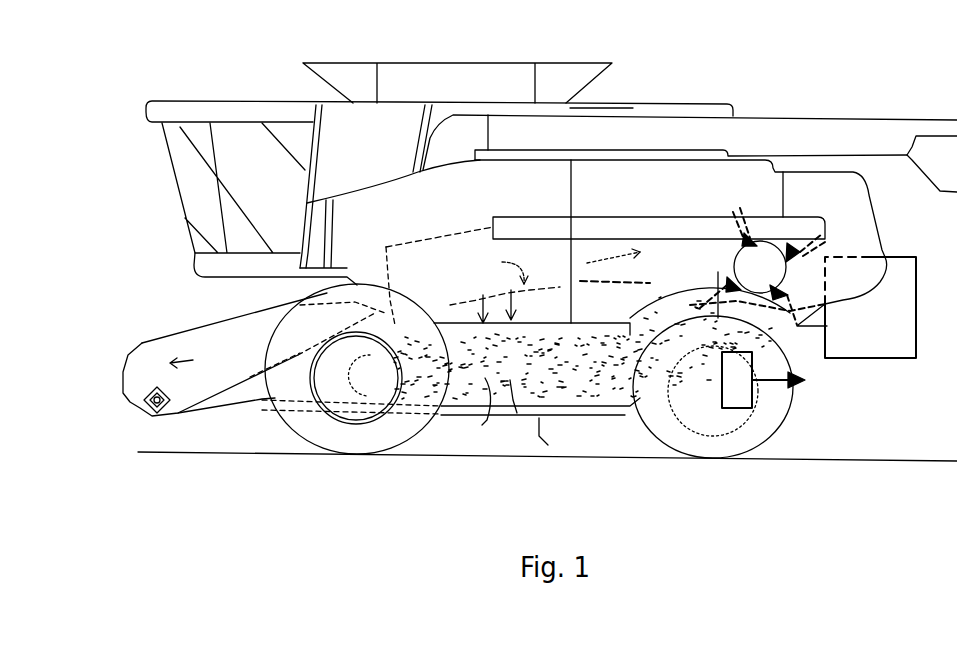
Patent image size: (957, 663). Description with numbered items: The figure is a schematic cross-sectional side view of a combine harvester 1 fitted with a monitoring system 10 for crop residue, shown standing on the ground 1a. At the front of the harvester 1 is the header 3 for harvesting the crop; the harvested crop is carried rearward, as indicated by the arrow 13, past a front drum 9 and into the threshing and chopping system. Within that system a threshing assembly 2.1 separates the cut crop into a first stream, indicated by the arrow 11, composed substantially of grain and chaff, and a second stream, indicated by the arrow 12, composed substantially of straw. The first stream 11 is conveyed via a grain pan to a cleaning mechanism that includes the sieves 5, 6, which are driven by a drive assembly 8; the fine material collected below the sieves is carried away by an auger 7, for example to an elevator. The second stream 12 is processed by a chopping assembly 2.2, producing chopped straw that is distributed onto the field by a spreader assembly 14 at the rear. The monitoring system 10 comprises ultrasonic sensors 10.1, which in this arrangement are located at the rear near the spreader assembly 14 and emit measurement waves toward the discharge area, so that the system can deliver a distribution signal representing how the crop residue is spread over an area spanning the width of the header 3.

The combine harvester 1 is at (882, 50).
The ground 1a is at (614, 412).
The threshing assembly 2.1 is at (422, 242).
The chopping assembly 2.2 is at (737, 247).
The header 3 is at (130, 332).
The sieve 5 is at (517, 344).
The sieve 6 is at (480, 415).
The auger 7 is at (549, 438).
The drive assembly 8 is at (517, 413).
The feederhouse drum 9 is at (370, 390).
The monitoring system 10 is at (775, 407).
The ultrasonic sensors 10.1 is at (733, 385).
The first stream 11 is at (503, 288).
The second stream 12 is at (635, 262).
The flow of harvested crop 13 is at (350, 325).
The spreader assembly 14 is at (873, 343).